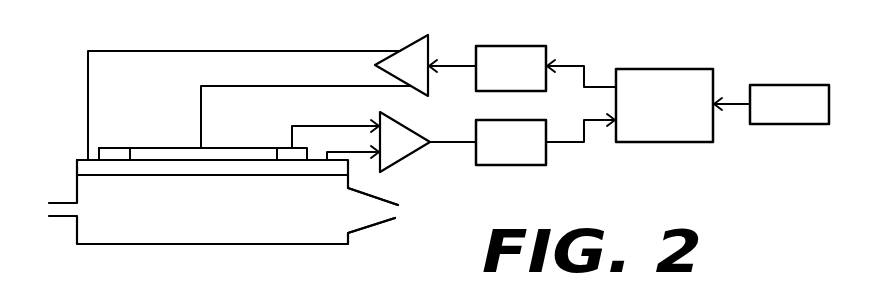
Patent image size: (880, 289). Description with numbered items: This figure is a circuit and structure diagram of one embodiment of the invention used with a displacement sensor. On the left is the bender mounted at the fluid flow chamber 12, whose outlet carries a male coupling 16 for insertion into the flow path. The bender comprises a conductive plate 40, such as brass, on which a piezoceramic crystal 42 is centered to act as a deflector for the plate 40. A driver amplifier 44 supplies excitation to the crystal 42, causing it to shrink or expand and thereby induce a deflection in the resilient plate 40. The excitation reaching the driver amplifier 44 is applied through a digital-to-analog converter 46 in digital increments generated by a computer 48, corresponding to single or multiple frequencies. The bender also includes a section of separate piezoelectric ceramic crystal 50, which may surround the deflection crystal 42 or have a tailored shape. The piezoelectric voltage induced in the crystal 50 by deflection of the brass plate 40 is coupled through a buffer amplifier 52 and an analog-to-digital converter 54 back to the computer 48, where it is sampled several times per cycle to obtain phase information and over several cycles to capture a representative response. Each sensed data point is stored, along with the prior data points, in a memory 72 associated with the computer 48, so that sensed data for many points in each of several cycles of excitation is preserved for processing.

The fluid flow chamber 12 is at (215, 218).
The male coupling 16 is at (375, 213).
The conductive plate 40 is at (77, 168).
The piezoceramic crystal 42 is at (152, 148).
The driver amplifier 44 is at (420, 72).
The digital-to-analog converter 46 is at (496, 46).
The computer 48 is at (655, 69).
The piezoelectric ceramic crystal 50 is at (113, 153).
The buffer amplifier 52 is at (384, 153).
The analog-to-digital converter 54 is at (507, 165).
The memory 72 is at (778, 85).